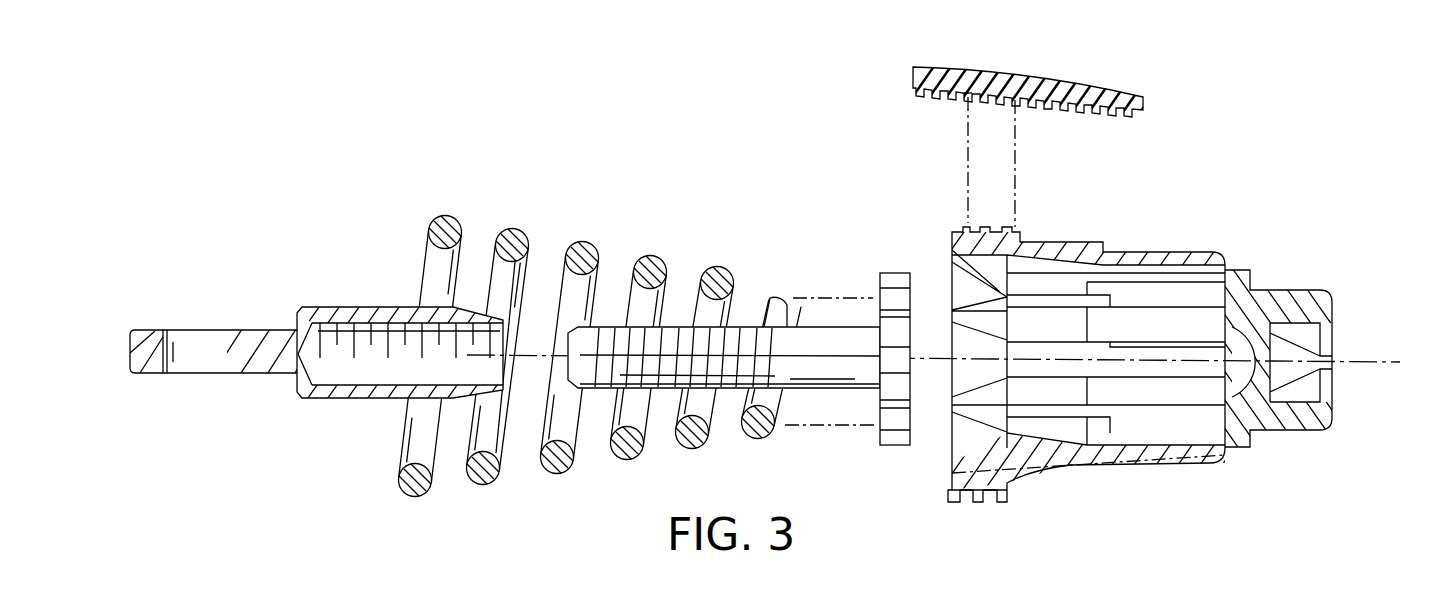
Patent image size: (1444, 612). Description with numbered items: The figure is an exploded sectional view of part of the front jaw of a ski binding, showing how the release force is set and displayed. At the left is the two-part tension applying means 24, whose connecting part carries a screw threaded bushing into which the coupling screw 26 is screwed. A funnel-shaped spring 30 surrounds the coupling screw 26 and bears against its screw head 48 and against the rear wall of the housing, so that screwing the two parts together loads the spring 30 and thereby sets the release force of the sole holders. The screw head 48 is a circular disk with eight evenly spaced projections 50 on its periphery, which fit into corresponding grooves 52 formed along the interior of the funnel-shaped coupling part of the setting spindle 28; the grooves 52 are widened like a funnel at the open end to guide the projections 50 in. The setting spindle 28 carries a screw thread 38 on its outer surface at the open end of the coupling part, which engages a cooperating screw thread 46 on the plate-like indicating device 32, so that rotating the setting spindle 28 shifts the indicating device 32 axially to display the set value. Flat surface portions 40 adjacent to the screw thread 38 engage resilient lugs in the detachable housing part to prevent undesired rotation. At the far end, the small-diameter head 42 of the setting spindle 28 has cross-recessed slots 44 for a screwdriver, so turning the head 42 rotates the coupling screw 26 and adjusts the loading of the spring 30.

The tension applying means 24 is at (253, 360).
The coupling screw 26 is at (823, 333).
The setting spindle 28 is at (1174, 250).
The spring 30 is at (510, 235).
The indicating device 32 is at (1071, 88).
The screw thread 38 is at (990, 499).
The flat surface portions 40 is at (1035, 478).
The head 42 is at (1293, 432).
The cross-recessed slots 44 is at (1324, 364).
The cooperating screw thread 46 is at (966, 93).
The screw head 48 is at (889, 446).
The projections 50 is at (884, 418).
The grooves 52 is at (1000, 291).